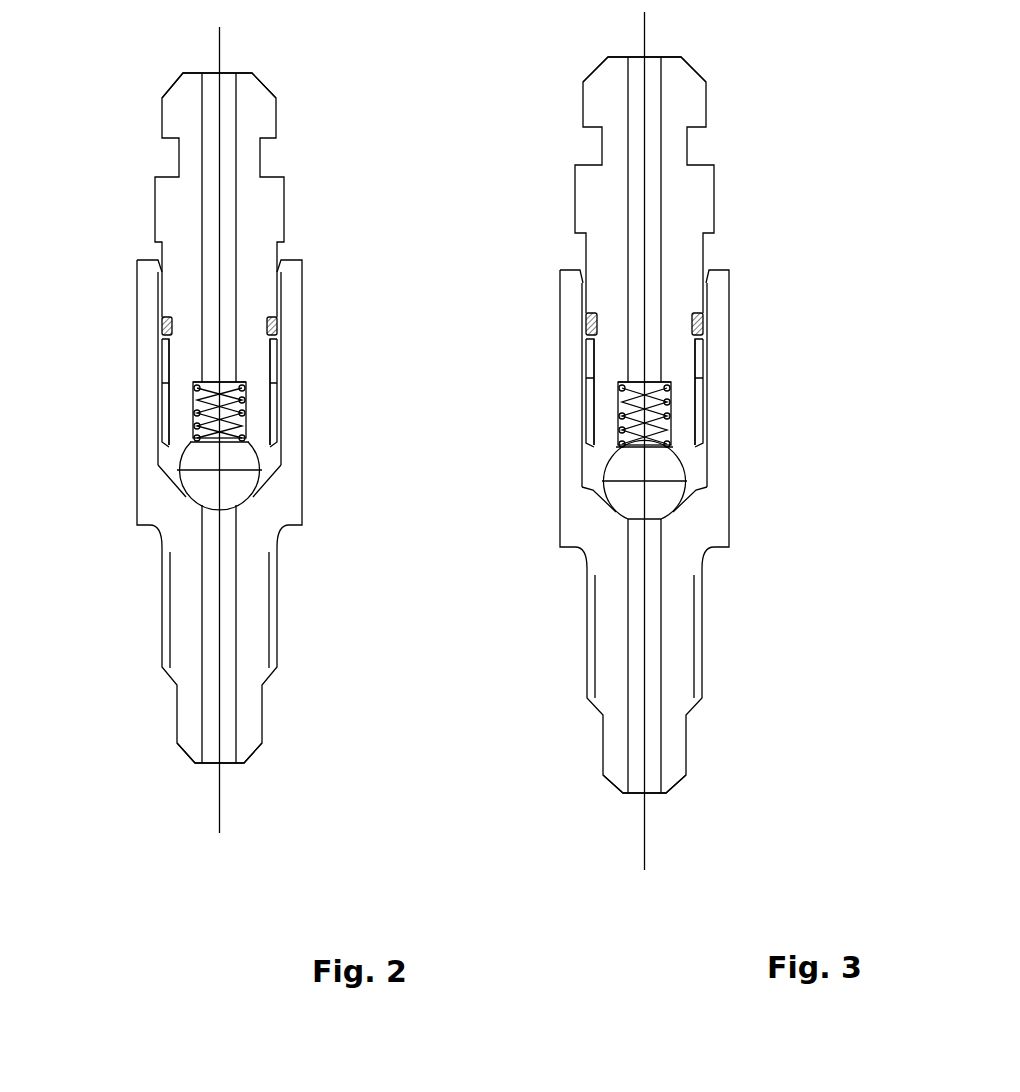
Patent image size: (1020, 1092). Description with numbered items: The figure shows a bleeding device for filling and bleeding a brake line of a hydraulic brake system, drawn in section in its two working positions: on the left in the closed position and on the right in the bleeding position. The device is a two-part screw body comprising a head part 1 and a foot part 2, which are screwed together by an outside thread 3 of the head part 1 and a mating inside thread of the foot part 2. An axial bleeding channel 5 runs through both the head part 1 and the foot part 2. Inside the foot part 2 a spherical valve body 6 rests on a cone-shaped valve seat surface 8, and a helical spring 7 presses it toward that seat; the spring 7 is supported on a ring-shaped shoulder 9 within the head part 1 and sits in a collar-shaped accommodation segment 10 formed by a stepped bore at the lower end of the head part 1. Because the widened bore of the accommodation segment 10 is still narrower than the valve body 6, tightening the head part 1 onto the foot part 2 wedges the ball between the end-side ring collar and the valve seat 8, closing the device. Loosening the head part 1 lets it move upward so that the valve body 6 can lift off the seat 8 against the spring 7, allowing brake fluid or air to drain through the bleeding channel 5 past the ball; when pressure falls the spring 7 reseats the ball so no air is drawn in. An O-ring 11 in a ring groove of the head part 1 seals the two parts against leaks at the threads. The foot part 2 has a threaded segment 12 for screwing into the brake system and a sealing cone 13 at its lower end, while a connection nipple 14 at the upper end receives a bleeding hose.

In FIG. 2, the head part 1 is at (173, 213).
In FIG. 3, the head part 1 is at (697, 205).
In FIG. 2, the foot part 2 is at (288, 502).
In FIG. 3, the foot part 2 is at (582, 522).
In FIG. 2, the outside thread 3 is at (306, 393).
In FIG. 3, the outside thread 3 is at (579, 393).
In FIG. 2, the axial bleeding channel 5 is at (227, 207).
In FIG. 3, the axial bleeding channel 5 is at (447, 140).
In FIG. 2, the spherical valve body 6 is at (240, 460).
In FIG. 3, the spherical valve body 6 is at (628, 472).
In FIG. 2, the helical spring 7 is at (197, 400).
In FIG. 3, the helical spring 7 is at (665, 415).
In FIG. 2, the cone-shaped valve seat surface 8 is at (185, 493).
In FIG. 3, the cone-shaped valve seat surface 8 is at (687, 512).
In FIG. 2, the ring-shaped shoulder 9 is at (197, 397).
In FIG. 3, the ring-shaped shoulder 9 is at (665, 380).
In FIG. 2, the collar-shaped accommodation segment 10 is at (180, 422).
In FIG. 3, the collar-shaped accommodation segment 10 is at (687, 432).
In FIG. 2, the O-ring 11 is at (273, 327).
In FIG. 3, the O-ring 11 is at (592, 323).
In FIG. 2, the threaded segment 12 is at (165, 621).
In FIG. 3, the threaded segment 12 is at (707, 643).
In FIG. 2, the sealing cone 13 is at (183, 753).
In FIG. 3, the sealing cone 13 is at (680, 783).
In FIG. 2, the connection nipple 14 is at (258, 98).
In FIG. 3, the connection nipple 14 is at (608, 82).